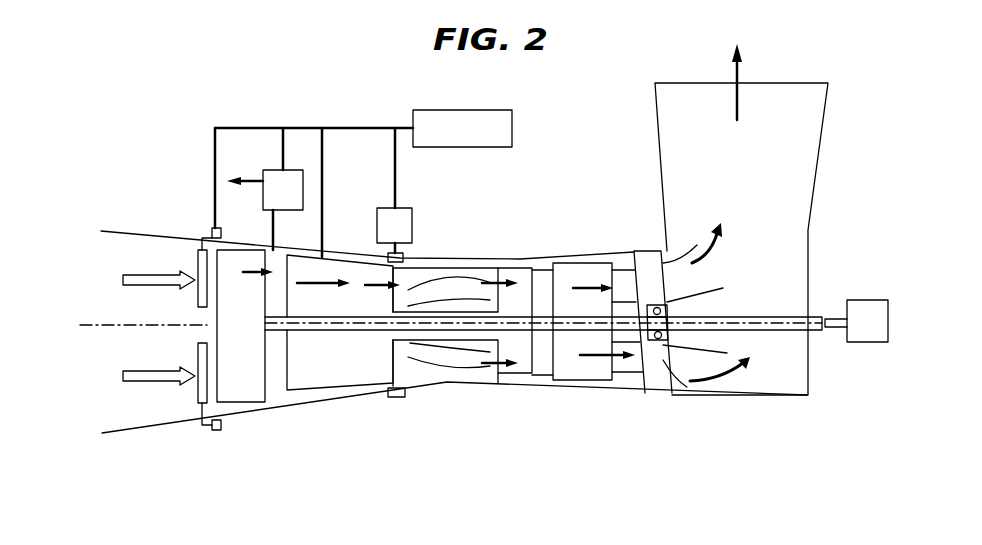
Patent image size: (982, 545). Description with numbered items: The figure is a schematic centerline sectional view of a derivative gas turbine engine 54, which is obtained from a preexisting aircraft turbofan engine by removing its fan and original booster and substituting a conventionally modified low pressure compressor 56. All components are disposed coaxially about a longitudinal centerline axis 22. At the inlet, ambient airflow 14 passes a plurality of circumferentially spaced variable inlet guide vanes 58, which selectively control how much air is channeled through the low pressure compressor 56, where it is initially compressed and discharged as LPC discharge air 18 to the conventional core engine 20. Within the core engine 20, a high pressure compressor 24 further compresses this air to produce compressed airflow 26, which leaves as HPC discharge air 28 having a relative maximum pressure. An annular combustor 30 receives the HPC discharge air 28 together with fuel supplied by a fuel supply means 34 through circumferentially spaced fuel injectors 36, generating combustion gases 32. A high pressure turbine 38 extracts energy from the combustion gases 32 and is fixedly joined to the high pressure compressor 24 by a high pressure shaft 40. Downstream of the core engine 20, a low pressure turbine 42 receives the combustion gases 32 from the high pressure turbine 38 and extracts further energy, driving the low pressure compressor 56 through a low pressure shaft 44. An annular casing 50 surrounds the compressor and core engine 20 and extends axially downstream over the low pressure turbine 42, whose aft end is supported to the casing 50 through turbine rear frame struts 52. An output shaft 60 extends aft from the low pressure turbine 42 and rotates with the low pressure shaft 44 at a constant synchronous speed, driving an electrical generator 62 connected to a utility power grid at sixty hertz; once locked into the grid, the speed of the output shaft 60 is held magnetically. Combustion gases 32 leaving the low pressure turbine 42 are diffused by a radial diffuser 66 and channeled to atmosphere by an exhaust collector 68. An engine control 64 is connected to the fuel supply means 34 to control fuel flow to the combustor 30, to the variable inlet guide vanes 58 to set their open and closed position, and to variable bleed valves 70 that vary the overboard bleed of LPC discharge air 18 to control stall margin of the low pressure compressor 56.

The ambient airflow 14 is at (152, 273).
The LPC discharge air 18 is at (253, 270).
The core engine 20 is at (533, 443).
The longitudinal centerline axis 22 is at (105, 327).
The high pressure compressor 24 is at (346, 366).
The compressed airflow 26 is at (308, 281).
The HPC discharge air 28 is at (368, 276).
The annular combustor 30 is at (455, 265).
The combustion gases 32 is at (490, 283).
The fuel supply means 34 is at (405, 236).
The fuel injectors 36 is at (412, 270).
The high pressure turbine 38 is at (518, 268).
The high pressure shaft 40 is at (489, 367).
The low pressure turbine 42 is at (562, 255).
The low pressure shaft 44 is at (287, 333).
The annular casing 50 is at (142, 230).
The turbine rear frame struts 52 is at (668, 257).
The derivative gas turbine engine 54 is at (601, 240).
The low pressure compressor 56 is at (249, 297).
The variable inlet guide vanes 58 is at (195, 303).
The output shaft 60 is at (818, 316).
The electrical generator 62 is at (878, 333).
The engine control 64 is at (512, 128).
The radial diffuser 66 is at (693, 352).
The exhaust collector 68 is at (810, 83).
The variable bleed valves 70 is at (294, 202).